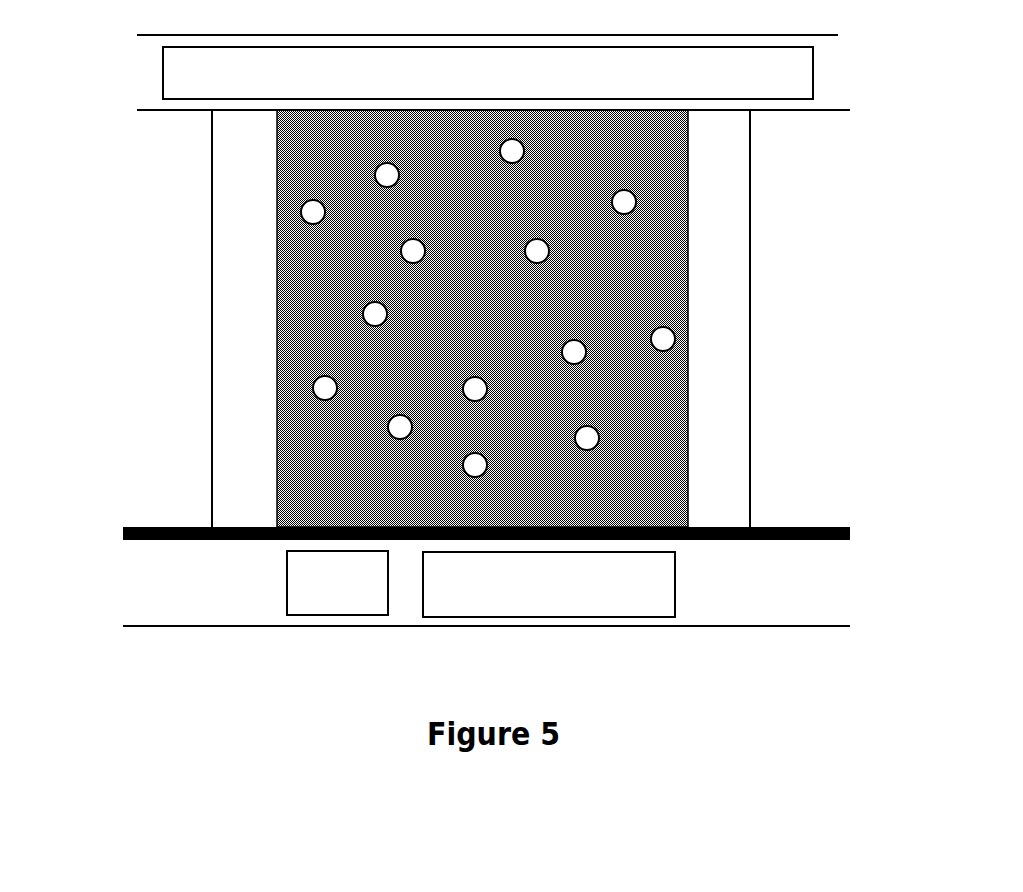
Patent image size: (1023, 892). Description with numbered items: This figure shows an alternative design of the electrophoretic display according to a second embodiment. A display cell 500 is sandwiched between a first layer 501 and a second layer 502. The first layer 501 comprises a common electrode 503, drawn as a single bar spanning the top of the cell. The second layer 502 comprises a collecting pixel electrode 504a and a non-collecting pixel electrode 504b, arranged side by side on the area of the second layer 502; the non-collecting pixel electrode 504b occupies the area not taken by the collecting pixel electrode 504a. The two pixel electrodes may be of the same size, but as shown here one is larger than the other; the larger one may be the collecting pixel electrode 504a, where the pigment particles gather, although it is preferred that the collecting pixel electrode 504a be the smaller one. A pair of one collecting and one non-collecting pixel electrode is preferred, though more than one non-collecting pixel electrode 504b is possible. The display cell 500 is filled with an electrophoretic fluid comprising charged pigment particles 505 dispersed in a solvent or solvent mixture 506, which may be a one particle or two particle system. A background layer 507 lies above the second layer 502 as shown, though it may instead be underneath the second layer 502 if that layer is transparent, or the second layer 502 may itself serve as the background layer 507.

The display cell 500 is at (313, 312).
The first layer 501 is at (148, 73).
The second layer 502 is at (225, 577).
The common electrode 503 is at (488, 73).
The collecting pixel electrode 504a is at (337, 583).
The non-collecting pixel electrode 504b is at (549, 584).
The charged pigment particles 505 is at (677, 340).
The solvent or solvent mixture 506 is at (653, 453).
The background layer 507 is at (860, 531).